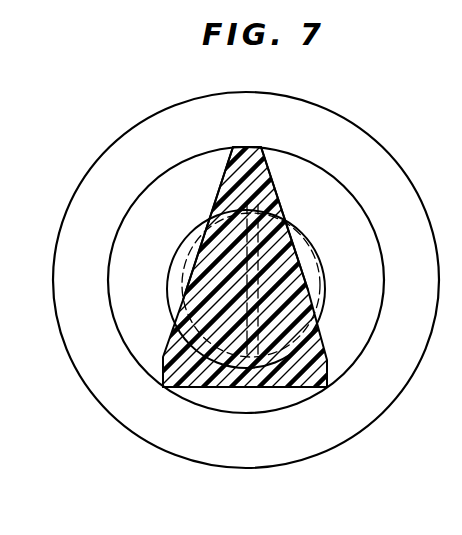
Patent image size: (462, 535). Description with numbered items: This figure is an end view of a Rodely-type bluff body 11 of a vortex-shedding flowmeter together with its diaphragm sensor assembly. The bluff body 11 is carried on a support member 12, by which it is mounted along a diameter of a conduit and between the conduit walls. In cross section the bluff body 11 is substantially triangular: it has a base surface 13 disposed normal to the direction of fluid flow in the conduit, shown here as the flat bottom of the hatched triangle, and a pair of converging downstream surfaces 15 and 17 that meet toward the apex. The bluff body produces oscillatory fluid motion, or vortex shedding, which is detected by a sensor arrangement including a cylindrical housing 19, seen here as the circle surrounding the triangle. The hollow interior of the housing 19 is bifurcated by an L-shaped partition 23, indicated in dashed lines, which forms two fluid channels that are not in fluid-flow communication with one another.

The bluff body 11 is at (329, 366).
The support member 12 is at (352, 120).
The base surface 13 is at (247, 390).
The converging downstream surface 15 is at (221, 192).
The converging downstream surface 17 is at (274, 192).
The cylindrical housing 19 is at (325, 289).
The L-shaped partition 23 is at (320, 267).